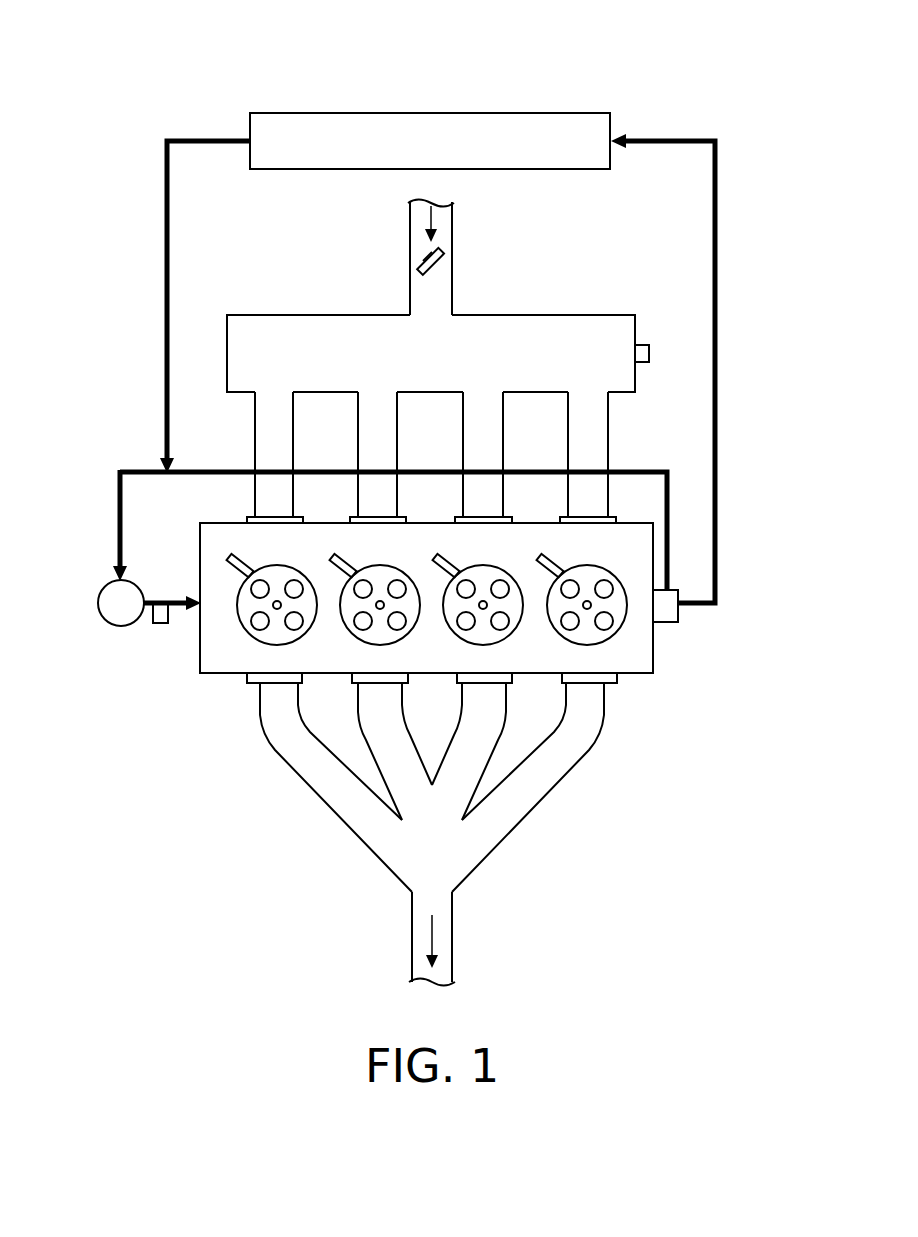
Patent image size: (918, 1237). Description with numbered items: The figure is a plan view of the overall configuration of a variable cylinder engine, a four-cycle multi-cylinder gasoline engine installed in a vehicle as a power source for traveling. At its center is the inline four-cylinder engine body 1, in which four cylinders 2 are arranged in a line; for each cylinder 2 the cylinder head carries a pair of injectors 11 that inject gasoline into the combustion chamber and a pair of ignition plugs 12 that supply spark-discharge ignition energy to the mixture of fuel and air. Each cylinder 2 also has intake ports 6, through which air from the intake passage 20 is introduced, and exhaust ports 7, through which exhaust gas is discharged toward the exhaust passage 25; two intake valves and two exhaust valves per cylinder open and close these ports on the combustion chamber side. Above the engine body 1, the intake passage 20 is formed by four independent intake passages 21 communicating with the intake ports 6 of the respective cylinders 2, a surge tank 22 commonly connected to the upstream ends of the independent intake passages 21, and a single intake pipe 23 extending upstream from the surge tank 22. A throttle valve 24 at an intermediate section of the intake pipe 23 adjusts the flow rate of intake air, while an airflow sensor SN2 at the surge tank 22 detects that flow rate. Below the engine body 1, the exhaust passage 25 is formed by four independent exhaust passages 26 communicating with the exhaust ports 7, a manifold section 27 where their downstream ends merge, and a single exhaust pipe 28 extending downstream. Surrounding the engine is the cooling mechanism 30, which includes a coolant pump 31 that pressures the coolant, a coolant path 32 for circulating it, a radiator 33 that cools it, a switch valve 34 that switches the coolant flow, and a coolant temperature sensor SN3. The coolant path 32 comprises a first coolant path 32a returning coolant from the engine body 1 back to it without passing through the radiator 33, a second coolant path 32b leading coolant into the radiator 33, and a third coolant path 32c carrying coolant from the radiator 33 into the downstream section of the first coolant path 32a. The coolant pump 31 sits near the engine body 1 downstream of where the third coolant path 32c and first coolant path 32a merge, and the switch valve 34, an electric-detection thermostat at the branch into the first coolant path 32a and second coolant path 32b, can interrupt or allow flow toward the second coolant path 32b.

The engine body 1 is at (437, 607).
The cylinder 2 is at (396, 606).
The intake port 6 is at (292, 582).
The exhaust port 7 is at (292, 628).
The injector 11 is at (230, 560).
The ignition plug 12 is at (272, 604).
The intake passage 20 is at (432, 362).
The independent intake passage 21 is at (254, 432).
The surge tank 22 is at (275, 312).
The intake pipe 23 is at (454, 228).
The throttle valve 24 is at (410, 262).
The exhaust passage 25 is at (451, 829).
The independent exhaust passage 26 is at (400, 765).
The manifold section 27 is at (455, 884).
The exhaust pipe 28 is at (455, 936).
The cooling mechanism 30 is at (421, 373).
The coolant pump 31 is at (105, 624).
The coolant path 32 is at (724, 190).
The first coolant path 32a is at (118, 515).
The second coolant path 32b is at (718, 432).
The third coolant path 32c is at (165, 300).
The radiator 33 is at (437, 128).
The switch valve 34 is at (680, 618).
The airflow sensor SN2 is at (650, 344).
The coolant temperature sensor SN3 is at (158, 626).